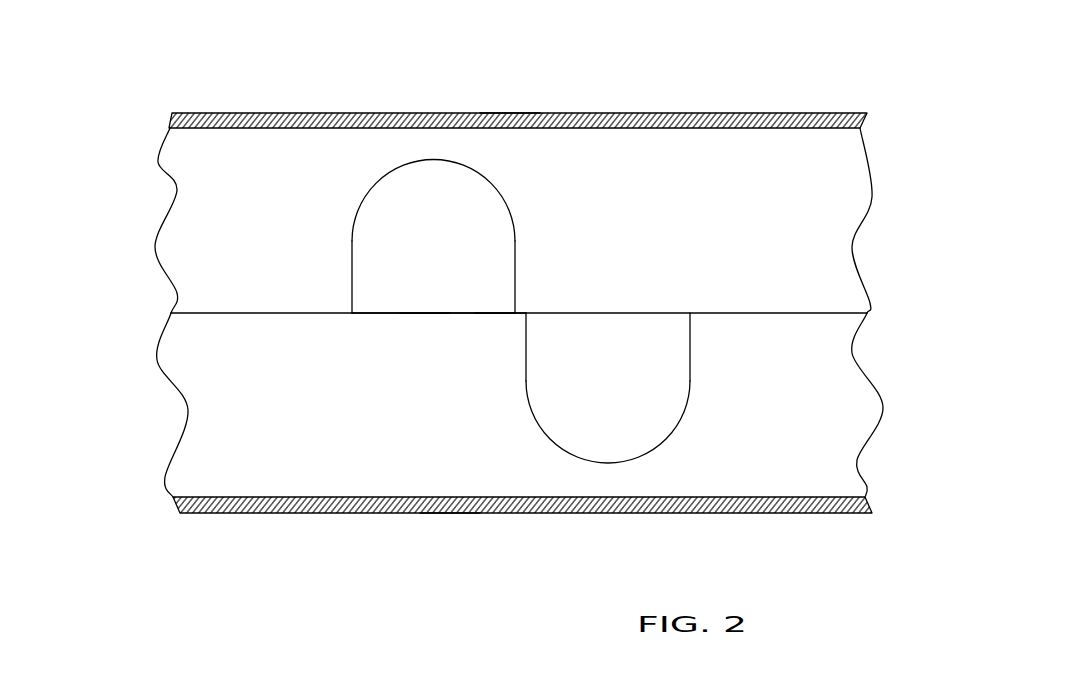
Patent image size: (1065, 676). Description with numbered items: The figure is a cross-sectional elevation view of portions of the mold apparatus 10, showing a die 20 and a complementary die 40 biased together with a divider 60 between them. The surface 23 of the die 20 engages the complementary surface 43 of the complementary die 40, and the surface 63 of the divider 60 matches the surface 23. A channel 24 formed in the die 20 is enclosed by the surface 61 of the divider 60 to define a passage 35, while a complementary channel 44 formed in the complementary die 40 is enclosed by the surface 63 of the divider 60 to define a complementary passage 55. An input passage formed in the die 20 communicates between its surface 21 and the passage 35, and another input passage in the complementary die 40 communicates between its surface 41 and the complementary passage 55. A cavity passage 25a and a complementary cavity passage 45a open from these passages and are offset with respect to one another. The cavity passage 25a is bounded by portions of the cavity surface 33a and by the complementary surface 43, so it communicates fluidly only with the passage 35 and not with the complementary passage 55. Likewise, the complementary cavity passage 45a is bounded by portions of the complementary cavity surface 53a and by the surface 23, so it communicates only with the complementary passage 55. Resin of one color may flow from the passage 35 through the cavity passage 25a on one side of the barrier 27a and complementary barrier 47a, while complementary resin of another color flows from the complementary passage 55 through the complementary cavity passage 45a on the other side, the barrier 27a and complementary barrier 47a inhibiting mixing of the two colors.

The mold apparatus 10 is at (128, 58).
The die 20 is at (218, 418).
The surface 21 is at (227, 513).
The surface 23 is at (497, 313).
The channel 24 is at (438, 497).
The cavity passage 25a is at (660, 408).
The barrier 27a is at (527, 380).
The cavity surface 33a is at (592, 463).
The passage 35 is at (334, 433).
The complementary die 40 is at (193, 183).
The surface 41 is at (277, 113).
The complementary surface 43 is at (652, 312).
The complementary channel 44 is at (472, 128).
The complementary cavity passage 45a is at (488, 222).
The complementary barrier 47a is at (513, 252).
The complementary cavity surface 53a is at (403, 183).
The complementary passage 55 is at (753, 215).
The divider 60 is at (473, 313).
The surface 61 is at (428, 313).
The surface 63 is at (408, 312).